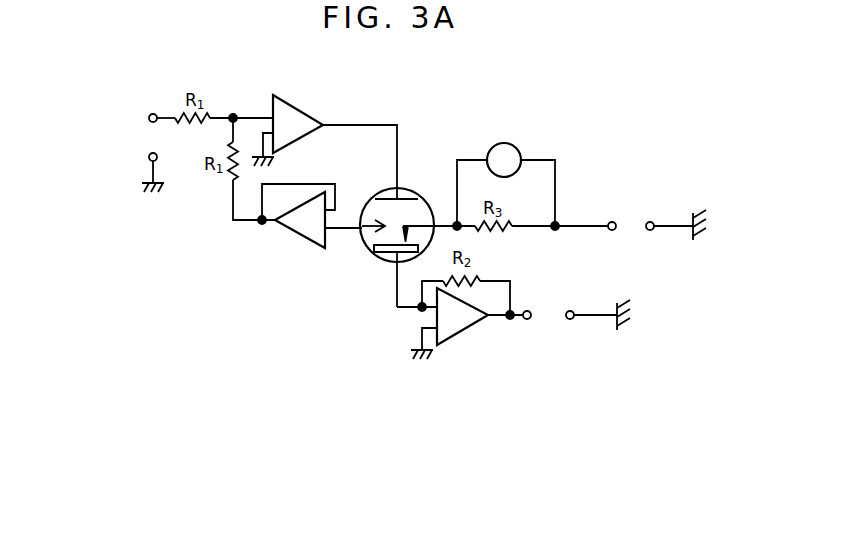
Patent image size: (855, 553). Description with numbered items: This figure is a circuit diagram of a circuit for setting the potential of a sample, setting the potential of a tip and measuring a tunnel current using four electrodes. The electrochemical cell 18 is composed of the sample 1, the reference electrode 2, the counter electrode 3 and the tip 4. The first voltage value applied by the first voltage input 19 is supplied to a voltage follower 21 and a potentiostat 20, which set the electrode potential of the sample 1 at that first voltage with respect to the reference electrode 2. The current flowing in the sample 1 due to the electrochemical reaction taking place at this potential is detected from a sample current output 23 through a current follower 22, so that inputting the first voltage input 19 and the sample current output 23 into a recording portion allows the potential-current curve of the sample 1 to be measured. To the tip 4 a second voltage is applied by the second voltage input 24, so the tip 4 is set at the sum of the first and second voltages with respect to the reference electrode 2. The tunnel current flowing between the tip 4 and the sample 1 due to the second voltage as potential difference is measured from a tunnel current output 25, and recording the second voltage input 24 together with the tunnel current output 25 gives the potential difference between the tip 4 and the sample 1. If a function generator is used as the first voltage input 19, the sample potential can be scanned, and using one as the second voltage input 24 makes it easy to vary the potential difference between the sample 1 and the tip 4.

The sample 1 is at (390, 234).
The reference electrode 2 is at (370, 228).
The counter electrode 3 is at (413, 198).
The tip 4 is at (393, 253).
The electrochemical cell 18 is at (402, 187).
The voltage input E1 19 is at (132, 153).
The potentiostat 20 is at (300, 102).
The voltage follower 21 is at (302, 237).
The current follower 22 is at (457, 340).
The sample current output 23 is at (548, 330).
The voltage input E2 24 is at (632, 253).
The tunnel current output 25 is at (522, 150).